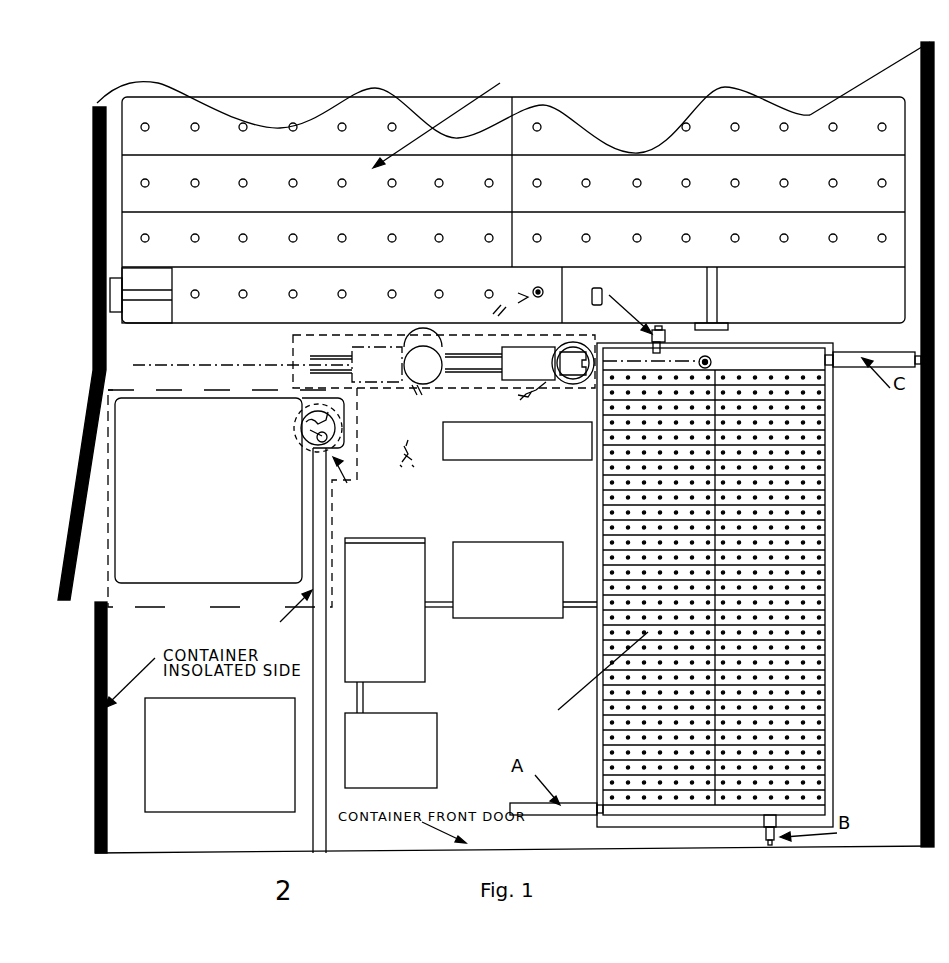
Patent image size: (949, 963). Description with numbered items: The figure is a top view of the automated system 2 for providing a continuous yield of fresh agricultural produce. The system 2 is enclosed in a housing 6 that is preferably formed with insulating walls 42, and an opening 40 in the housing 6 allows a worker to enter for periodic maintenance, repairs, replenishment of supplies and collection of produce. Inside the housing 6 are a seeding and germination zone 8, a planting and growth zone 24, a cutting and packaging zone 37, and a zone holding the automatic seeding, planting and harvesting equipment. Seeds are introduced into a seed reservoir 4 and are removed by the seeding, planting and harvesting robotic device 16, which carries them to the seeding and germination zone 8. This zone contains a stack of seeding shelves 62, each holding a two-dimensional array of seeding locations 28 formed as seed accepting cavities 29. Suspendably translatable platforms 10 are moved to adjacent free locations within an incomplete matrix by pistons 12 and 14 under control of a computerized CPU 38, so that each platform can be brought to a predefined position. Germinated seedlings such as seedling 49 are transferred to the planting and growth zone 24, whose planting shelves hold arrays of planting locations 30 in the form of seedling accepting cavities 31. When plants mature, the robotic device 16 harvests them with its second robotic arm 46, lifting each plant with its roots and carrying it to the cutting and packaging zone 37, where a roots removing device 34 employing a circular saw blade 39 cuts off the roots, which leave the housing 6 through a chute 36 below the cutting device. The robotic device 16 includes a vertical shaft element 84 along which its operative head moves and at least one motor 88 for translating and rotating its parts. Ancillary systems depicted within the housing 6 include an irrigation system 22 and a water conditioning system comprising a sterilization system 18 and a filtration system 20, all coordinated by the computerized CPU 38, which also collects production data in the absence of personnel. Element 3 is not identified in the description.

The system 2 is at (698, 828).
The roots disposer 3 is at (142, 586).
The seed reservoir 4 is at (537, 450).
The housing 6 is at (908, 848).
The seeding and germination zone 8 is at (833, 799).
The suspendably translatable platforms 10 is at (810, 360).
The piston 12 is at (763, 836).
The piston 14 is at (851, 362).
The seeding, planting and harvesting robotic device 16 is at (513, 374).
The sterilization system 18 is at (522, 620).
The filtration system 20 is at (408, 657).
The irrigation system 22 is at (427, 738).
The planting and growth zone 24 is at (135, 323).
The seeding locations 28 is at (218, 325).
The seed accepting cavities 29 is at (803, 573).
The planting locations 30 is at (501, 192).
The seedling accepting cavities 31 is at (292, 187).
The roots removing device 34 is at (343, 440).
The chute 36 is at (318, 522).
The cutting and packaging zone 37 is at (358, 462).
The computerized CPU 38 is at (214, 812).
The circular saw blade 39 is at (298, 424).
The opening 40 is at (82, 592).
The insulating walls 42 is at (108, 820).
The second robotic arm 46 is at (527, 396).
The seedling 49 is at (540, 287).
The seeding shelves 62 is at (663, 828).
The vertical shaft element 84 is at (120, 117).
The motor 88 is at (713, 358).